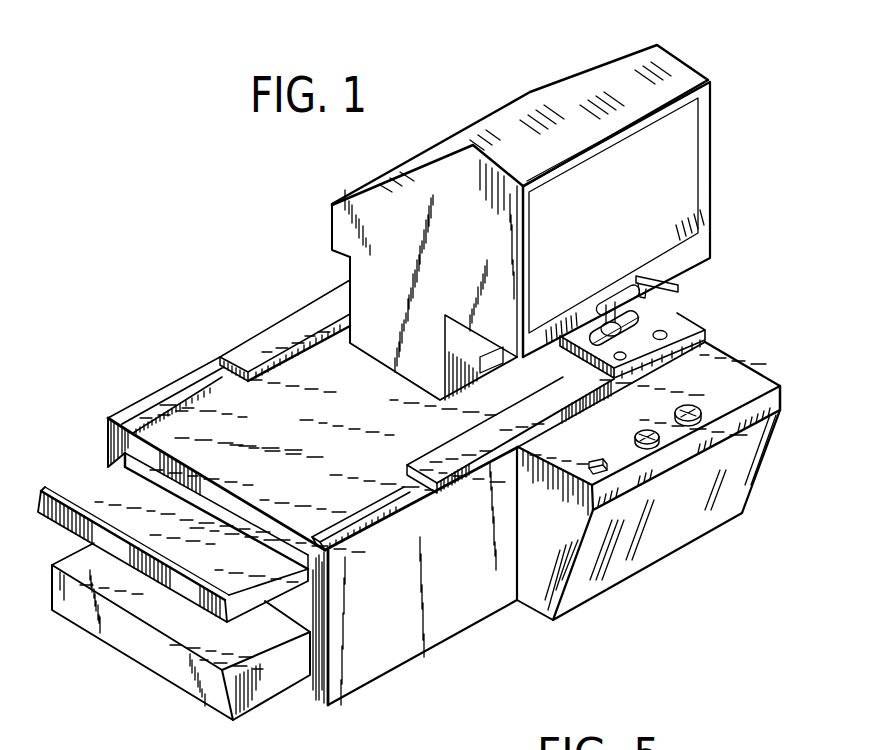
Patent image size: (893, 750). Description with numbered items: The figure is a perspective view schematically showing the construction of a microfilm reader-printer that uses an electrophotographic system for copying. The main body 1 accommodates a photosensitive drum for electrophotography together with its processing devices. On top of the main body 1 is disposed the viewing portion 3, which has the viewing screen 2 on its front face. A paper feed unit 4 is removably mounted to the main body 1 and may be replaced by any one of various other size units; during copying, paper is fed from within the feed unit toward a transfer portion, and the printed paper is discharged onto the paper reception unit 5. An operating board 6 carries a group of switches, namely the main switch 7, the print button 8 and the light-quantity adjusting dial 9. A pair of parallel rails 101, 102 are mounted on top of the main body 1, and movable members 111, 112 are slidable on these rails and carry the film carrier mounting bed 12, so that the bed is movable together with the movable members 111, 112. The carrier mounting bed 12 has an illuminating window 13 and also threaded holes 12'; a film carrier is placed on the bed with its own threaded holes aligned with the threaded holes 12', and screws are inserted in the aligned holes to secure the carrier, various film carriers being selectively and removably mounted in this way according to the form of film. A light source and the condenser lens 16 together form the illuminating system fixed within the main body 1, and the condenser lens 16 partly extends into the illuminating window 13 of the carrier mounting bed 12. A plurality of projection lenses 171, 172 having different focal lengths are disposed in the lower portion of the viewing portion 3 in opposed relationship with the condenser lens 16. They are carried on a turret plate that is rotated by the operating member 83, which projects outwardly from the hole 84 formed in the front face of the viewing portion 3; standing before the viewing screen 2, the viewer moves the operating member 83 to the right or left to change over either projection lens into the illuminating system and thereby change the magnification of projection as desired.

The main body 1 is at (375, 672).
The viewing screen 2 is at (690, 157).
The viewing portion 3 is at (680, 64).
The paper feed unit 4 is at (272, 676).
The paper reception unit 5 is at (98, 492).
The operating board 6 is at (742, 362).
The main switch 7 is at (592, 462).
The print button 8 is at (647, 450).
The light-quantity adjusting dial 9 is at (687, 427).
The film carrier mounting bed 12 is at (646, 341).
The threaded holes 12' is at (691, 357).
The illuminating window 13 is at (628, 328).
The condenser lens 16 is at (606, 326).
The operating member 83 is at (657, 276).
The hole 84 is at (609, 296).
The rail 101 is at (190, 377).
The rail 102 is at (362, 518).
The movable member 111 is at (320, 304).
The movable member 112 is at (462, 458).
The projection lens 171 is at (617, 308).
The projection lens 172 is at (646, 296).